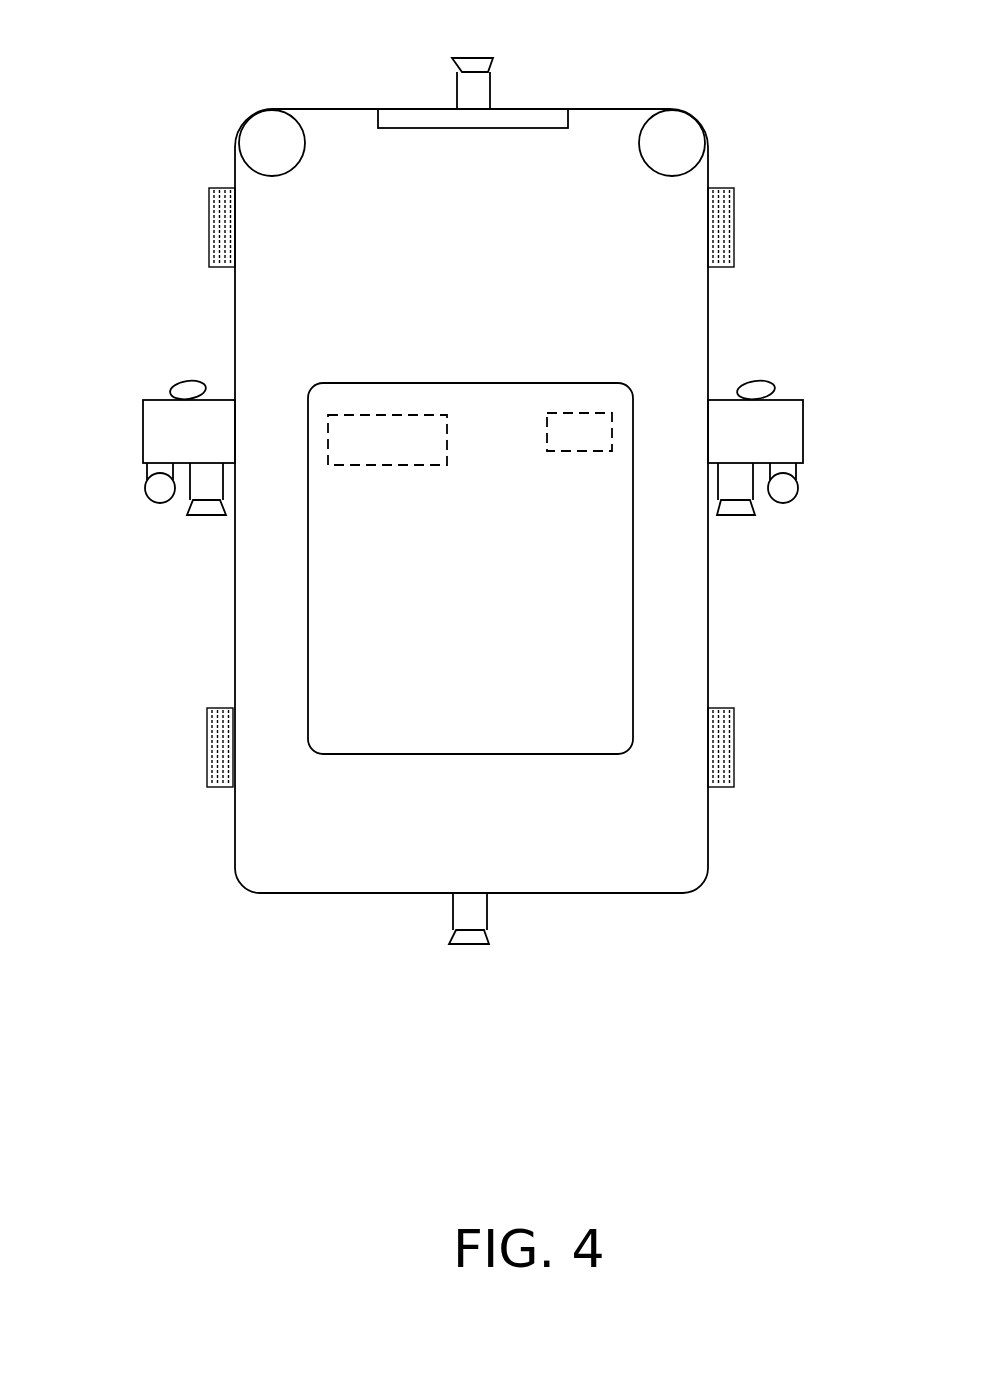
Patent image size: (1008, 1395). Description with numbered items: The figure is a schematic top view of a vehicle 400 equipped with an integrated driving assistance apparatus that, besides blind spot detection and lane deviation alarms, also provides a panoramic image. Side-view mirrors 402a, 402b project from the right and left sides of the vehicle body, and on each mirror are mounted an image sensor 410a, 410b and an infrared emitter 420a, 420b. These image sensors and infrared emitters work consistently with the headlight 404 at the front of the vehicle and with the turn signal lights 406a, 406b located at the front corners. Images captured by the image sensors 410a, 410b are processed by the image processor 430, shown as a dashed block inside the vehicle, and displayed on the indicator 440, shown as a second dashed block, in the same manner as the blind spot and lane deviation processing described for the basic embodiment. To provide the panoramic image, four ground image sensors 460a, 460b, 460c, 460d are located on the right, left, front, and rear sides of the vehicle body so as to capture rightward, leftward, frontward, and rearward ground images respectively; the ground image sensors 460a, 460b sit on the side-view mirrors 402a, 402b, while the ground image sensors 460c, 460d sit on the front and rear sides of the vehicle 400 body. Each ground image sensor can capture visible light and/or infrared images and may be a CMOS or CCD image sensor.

The vehicle 400 is at (703, 887).
The side-view mirror 402a is at (803, 434).
The side-view mirror 402b is at (143, 432).
The headlight 404 is at (555, 111).
The turn signal light 406a is at (683, 128).
The turn signal light 406b is at (270, 135).
The image sensor 410a is at (738, 517).
The image sensor 410b is at (206, 517).
The infrared emitter 420a is at (798, 492).
The infrared emitter 420b is at (146, 490).
The image processor 430 is at (587, 410).
The indicator 440 is at (357, 416).
The ground image sensor 460a is at (762, 388).
The ground image sensor 460b is at (183, 388).
The ground image sensor 460c is at (470, 58).
The ground image sensor 460d is at (470, 946).